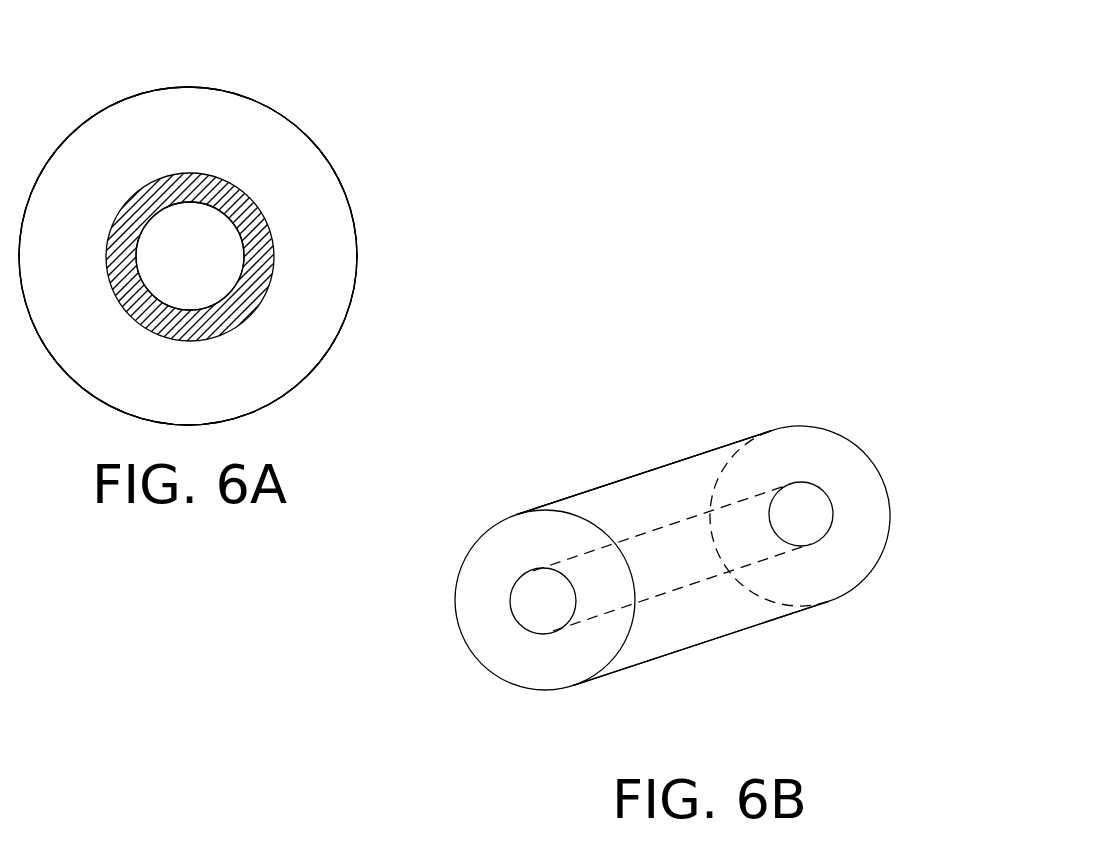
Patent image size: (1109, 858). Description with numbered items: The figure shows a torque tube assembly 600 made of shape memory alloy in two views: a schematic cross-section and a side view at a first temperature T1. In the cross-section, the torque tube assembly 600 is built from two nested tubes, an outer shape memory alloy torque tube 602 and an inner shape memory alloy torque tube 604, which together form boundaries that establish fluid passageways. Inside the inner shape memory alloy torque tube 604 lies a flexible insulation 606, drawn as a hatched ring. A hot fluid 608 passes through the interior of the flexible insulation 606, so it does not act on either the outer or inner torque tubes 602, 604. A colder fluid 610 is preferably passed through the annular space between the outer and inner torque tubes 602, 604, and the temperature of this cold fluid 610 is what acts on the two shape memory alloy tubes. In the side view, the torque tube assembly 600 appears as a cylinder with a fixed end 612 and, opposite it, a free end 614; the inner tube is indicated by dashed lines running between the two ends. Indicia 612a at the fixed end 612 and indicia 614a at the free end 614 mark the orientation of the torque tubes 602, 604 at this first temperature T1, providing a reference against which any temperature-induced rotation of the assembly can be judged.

In FIG. 6A, the torque tube assembly 600 is at (260, 62).
In FIG. 6B, the torque tube assembly 600 is at (665, 384).
In FIG. 6A, the outer shape memory alloy torque tube 602 is at (322, 152).
In FIG. 6B, the outer shape memory alloy torque tube 602 is at (623, 480).
In FIG. 6A, the inner shape memory alloy torque tube 604 is at (145, 327).
In FIG. 6B, the inner shape memory alloy torque tube 604 is at (663, 597).
In FIG. 6A, the flexible insulation 606 is at (150, 192).
In FIG. 6A, the hot fluid 608 is at (210, 268).
In FIG. 6A, the colder fluid 610 is at (332, 260).
In FIG. 6B, the fixed end 612 is at (510, 668).
In FIG. 6B, the indicia 612a is at (533, 528).
In FIG. 6B, the free end 614 is at (883, 473).
In FIG. 6B, the indicia 614a is at (790, 428).
In FIG. 6B, the first temperature T1 is at (925, 620).